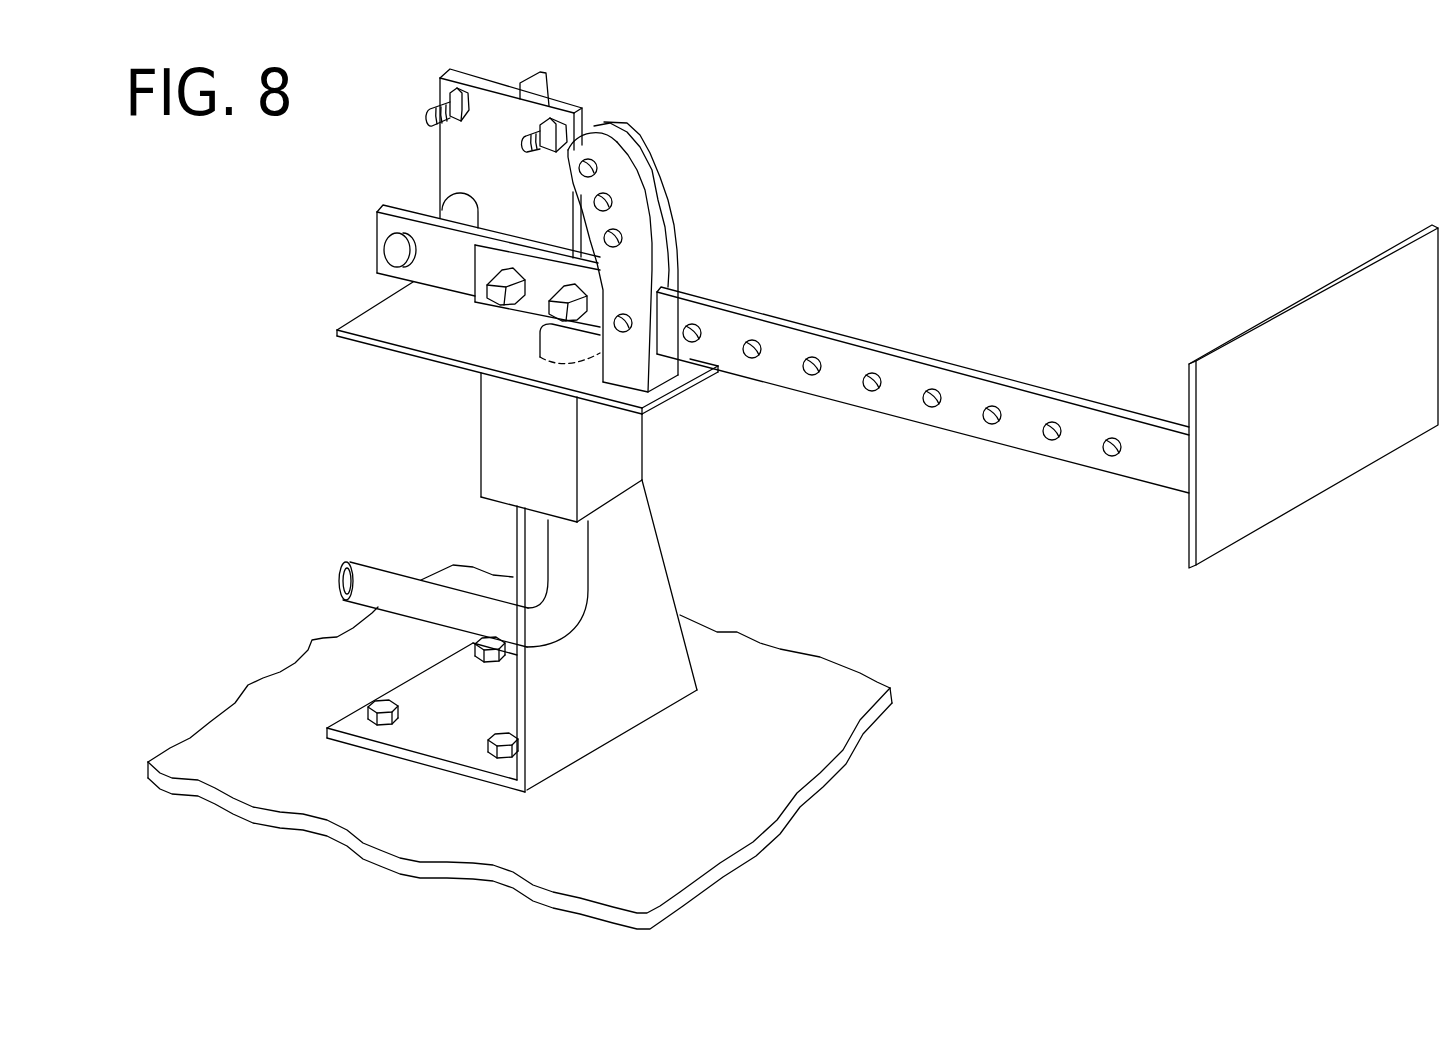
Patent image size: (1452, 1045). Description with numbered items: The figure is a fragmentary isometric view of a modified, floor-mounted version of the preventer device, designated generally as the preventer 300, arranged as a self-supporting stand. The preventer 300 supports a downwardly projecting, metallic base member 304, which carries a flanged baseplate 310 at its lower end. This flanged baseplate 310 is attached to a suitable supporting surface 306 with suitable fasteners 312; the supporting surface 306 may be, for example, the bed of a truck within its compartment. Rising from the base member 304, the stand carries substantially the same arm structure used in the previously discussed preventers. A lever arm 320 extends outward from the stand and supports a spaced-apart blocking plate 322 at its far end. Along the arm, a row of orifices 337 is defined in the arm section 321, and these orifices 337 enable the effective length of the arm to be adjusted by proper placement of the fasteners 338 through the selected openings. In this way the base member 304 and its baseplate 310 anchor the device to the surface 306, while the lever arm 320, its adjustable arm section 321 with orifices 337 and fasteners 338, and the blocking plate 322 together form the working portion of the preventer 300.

The preventer device 300 is at (612, 264).
The base member 304 is at (667, 553).
The supporting surface 306 is at (813, 680).
The flanged baseplate 310 is at (343, 660).
The fasteners 312 is at (386, 703).
The lever arm 320 is at (923, 387).
The arm section 321 is at (898, 409).
The blocking plate 322 is at (1318, 462).
The orifices 337 is at (983, 425).
The fasteners 338 is at (558, 315).